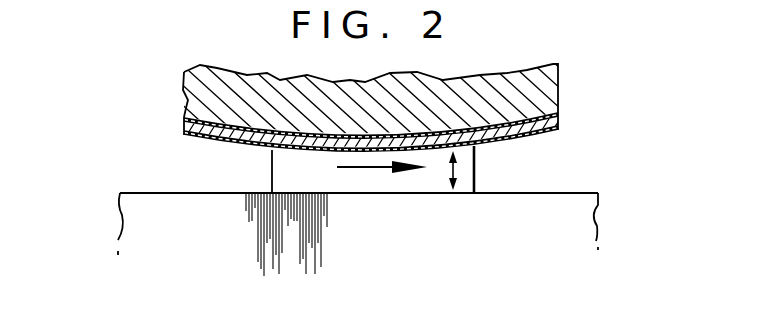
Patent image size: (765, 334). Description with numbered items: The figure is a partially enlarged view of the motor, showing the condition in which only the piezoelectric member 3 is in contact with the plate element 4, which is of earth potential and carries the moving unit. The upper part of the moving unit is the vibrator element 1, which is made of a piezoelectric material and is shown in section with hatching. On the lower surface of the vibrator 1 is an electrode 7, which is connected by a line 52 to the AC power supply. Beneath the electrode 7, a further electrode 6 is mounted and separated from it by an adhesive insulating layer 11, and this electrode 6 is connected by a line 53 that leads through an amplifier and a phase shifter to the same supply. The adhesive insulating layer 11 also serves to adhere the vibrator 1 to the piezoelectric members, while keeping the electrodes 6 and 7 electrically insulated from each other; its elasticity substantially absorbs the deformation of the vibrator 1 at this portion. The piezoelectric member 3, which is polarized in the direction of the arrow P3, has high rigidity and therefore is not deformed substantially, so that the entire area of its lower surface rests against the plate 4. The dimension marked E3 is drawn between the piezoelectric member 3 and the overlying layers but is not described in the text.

The vibrator element 1 is at (545, 85).
The electrode 7 is at (346, 132).
The electrode 6 is at (549, 131).
The line 52 is at (185, 119).
The line 53 is at (186, 133).
The adhesive insulating layer 11 is at (493, 138).
The piezoelectric member 3 is at (477, 176).
The plate element 4 is at (578, 225).
The polarization direction arrow P3 is at (373, 168).
The gap distance E3 is at (447, 172).